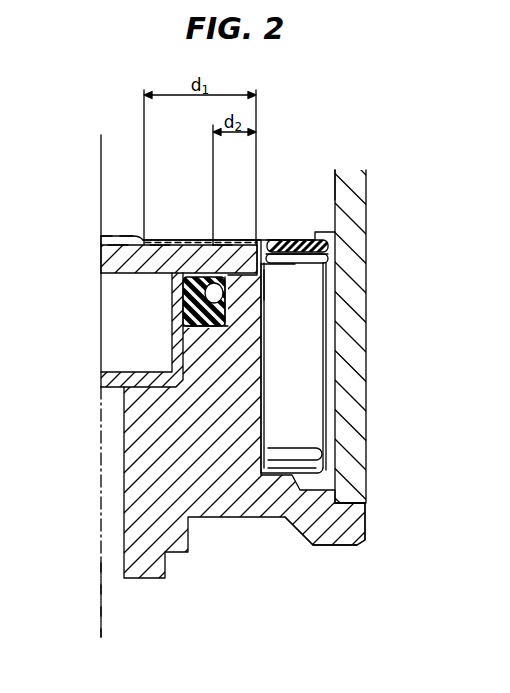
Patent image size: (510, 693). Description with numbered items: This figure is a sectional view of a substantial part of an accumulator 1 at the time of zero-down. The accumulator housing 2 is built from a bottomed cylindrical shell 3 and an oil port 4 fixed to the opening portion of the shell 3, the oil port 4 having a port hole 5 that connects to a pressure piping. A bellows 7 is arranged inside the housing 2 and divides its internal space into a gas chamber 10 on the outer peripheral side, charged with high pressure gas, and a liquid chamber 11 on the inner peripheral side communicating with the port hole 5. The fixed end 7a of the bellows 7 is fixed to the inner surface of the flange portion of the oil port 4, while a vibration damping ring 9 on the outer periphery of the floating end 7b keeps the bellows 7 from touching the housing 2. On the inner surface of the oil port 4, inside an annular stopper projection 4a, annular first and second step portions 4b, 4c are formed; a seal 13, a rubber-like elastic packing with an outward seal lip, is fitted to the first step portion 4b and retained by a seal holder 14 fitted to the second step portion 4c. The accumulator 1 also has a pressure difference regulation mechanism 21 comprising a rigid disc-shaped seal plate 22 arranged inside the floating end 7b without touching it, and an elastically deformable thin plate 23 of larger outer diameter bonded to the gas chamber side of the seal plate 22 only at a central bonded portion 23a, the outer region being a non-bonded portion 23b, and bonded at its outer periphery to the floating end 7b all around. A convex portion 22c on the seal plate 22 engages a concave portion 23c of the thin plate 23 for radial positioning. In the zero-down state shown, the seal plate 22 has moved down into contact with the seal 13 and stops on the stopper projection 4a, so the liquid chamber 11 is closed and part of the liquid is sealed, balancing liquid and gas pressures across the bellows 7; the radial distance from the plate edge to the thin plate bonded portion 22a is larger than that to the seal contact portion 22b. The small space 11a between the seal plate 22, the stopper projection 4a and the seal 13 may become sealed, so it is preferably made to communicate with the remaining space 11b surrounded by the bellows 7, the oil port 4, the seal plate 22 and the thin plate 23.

The accumulator 1 is at (96, 209).
The accumulator housing 2 is at (352, 172).
The bottomed cylindrical shell 3 is at (358, 196).
The oil port 4 is at (215, 497).
The stopper projection 4a is at (272, 270).
The first step portion 4b is at (232, 318).
The second step portion 4c is at (296, 450).
The port hole 5 is at (112, 567).
The bellows 7 is at (305, 373).
The fixed end 7a is at (350, 541).
The floating end 7b is at (292, 238).
The vibration damping ring 9 is at (322, 244).
The gas chamber 10 is at (185, 140).
The liquid chamber 11 is at (266, 397).
The space 11a is at (268, 278).
The space 11b is at (292, 262).
The seal 13 is at (198, 300).
The seal holder 14 is at (176, 345).
The pressure difference regulation mechanism 21 is at (101, 264).
The seal plate 22 is at (150, 270).
The thin plate bonded portion 22a is at (158, 244).
The seal contact portion 22b is at (222, 244).
The convex portion 22c is at (115, 244).
The thin plate 23 is at (265, 238).
The bonded portion 23a is at (137, 240).
The non-bonded portion 23b is at (253, 239).
The concave portion 23c is at (100, 240).